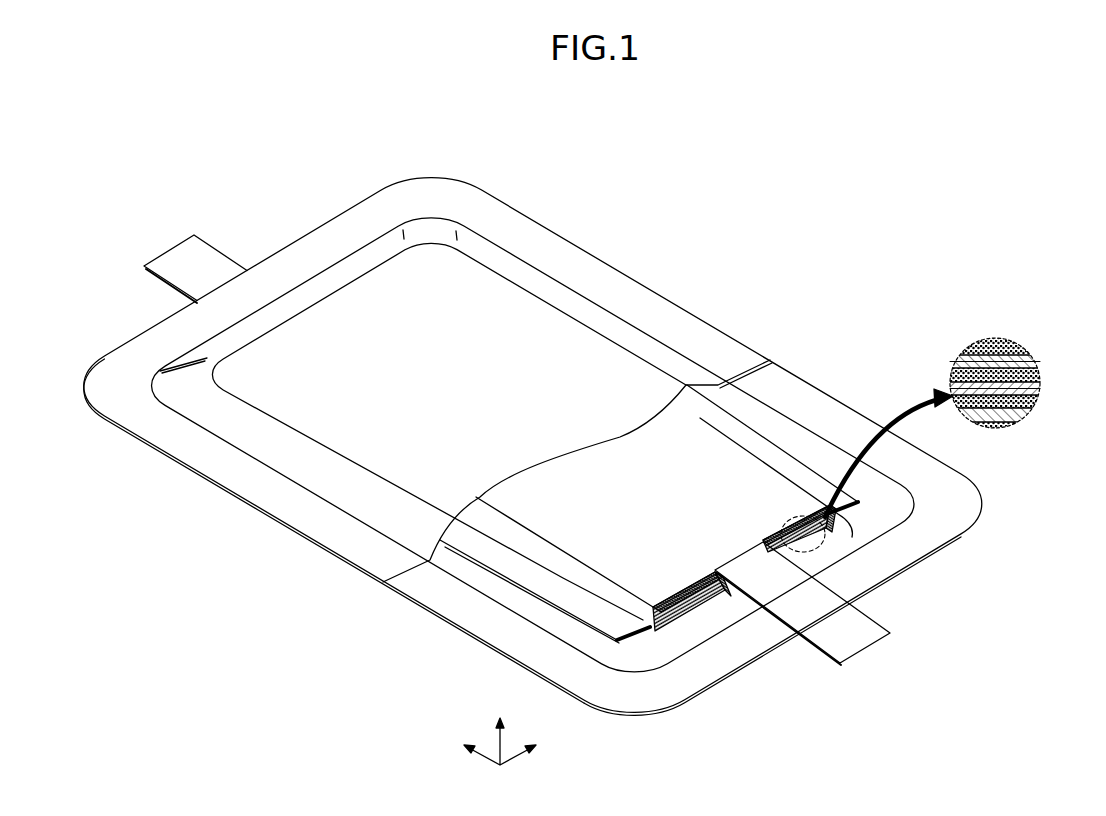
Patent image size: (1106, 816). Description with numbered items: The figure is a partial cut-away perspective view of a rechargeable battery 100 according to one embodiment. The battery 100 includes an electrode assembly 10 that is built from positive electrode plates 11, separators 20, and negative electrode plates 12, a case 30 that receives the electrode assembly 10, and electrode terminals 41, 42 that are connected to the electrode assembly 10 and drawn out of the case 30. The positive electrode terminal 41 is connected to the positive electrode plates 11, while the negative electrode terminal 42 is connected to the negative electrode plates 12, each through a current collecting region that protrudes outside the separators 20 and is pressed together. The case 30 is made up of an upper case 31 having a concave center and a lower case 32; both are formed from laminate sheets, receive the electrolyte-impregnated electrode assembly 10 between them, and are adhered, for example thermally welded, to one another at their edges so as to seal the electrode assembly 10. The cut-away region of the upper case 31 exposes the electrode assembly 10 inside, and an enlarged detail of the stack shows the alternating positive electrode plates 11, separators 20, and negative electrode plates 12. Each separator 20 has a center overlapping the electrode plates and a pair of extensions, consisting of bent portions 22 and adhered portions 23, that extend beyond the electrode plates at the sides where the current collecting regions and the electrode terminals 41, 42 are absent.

The rechargeable battery 100 is at (492, 129).
The electrode assembly 10 is at (687, 478).
The separators 20 is at (950, 378).
The positive electrode plates 11 is at (1033, 358).
The negative electrode plates 12 is at (1030, 390).
The bent portions 22 is at (653, 628).
The adhered portions 23 is at (540, 580).
The case 30 is at (389, 664).
The upper case 31 is at (373, 555).
The lower case 32 is at (438, 593).
The positive electrode terminal 41 is at (176, 256).
The negative electrode terminal 42 is at (845, 641).